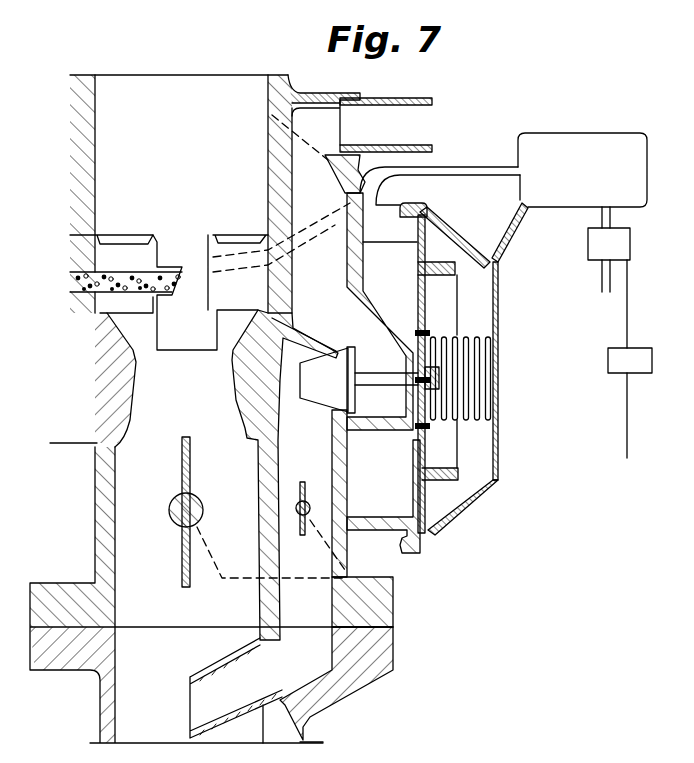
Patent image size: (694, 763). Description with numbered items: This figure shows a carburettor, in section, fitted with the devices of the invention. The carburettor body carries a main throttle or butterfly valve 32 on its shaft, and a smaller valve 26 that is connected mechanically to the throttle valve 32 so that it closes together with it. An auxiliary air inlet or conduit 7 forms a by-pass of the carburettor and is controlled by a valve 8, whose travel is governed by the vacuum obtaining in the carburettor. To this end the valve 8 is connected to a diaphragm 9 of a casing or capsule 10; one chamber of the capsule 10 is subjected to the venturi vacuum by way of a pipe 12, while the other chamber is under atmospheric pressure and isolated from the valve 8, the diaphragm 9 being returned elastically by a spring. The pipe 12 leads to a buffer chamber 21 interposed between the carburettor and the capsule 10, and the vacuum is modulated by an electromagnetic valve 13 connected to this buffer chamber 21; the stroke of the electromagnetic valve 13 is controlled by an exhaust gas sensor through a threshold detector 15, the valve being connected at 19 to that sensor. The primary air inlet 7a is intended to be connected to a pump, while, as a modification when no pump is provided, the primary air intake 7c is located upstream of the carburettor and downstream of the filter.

The auxiliary air inlet 7 is at (315, 465).
The primary air inlet 7a is at (410, 120).
The primary air intake 7c is at (278, 150).
The valve 8 is at (380, 368).
The diaphragm 9 is at (427, 448).
The capsule 10 is at (490, 490).
The pipe 12 is at (460, 166).
The electromagnetic valve 13 is at (597, 247).
The threshold detector 15 is at (650, 357).
The connection to the sensor 19 is at (630, 441).
The buffer chamber 21 is at (578, 145).
The valve 26 is at (303, 530).
The main throttle valve 32 is at (187, 553).